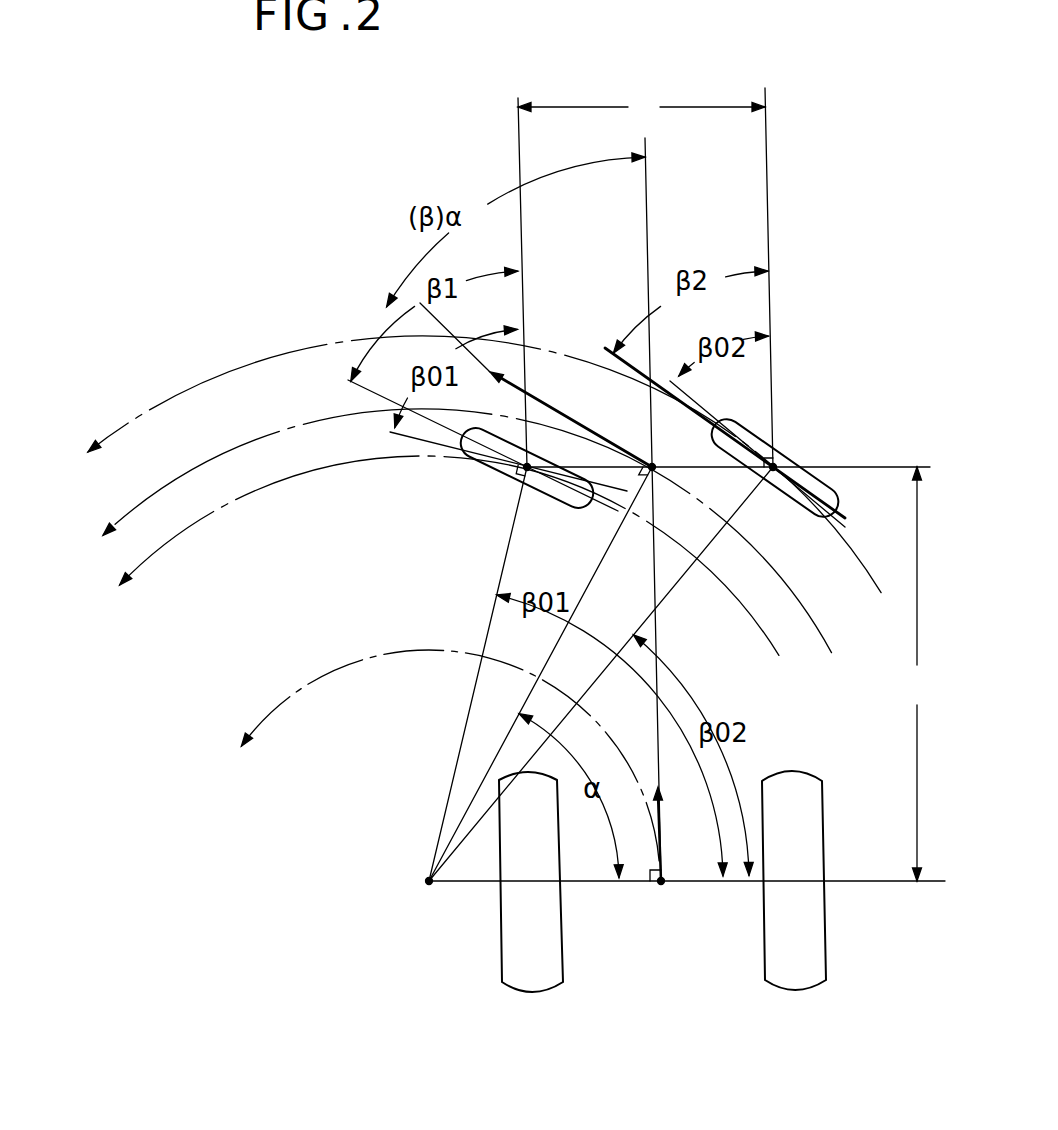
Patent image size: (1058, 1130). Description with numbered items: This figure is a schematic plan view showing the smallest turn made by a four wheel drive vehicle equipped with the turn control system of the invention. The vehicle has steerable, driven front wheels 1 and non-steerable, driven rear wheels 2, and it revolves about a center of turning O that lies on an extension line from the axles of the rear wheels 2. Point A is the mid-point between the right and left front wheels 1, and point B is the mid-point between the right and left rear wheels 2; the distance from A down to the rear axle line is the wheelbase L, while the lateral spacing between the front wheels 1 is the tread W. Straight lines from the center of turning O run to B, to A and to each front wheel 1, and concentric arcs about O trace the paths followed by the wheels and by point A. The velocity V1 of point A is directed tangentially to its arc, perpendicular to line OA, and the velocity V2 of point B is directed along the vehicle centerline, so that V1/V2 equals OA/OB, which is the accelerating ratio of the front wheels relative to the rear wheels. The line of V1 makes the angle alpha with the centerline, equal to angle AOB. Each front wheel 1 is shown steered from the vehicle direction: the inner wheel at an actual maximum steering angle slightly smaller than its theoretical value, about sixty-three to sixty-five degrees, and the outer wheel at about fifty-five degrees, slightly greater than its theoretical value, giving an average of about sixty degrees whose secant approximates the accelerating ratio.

The front wheels 1 is at (500, 479).
The rear wheels 2 is at (507, 938).
The mid-point between the right and left front wheels A is at (657, 455).
The mid-point between the right and left rear wheels B is at (661, 895).
The center of turning O is at (420, 898).
The tread of the front wheels W is at (641, 108).
The wheelbase L is at (916, 674).
The velocity of movement of the mid-point between the front wheels V1 is at (536, 385).
The velocity of movement of the mid-point between the rear wheels V2 is at (678, 832).